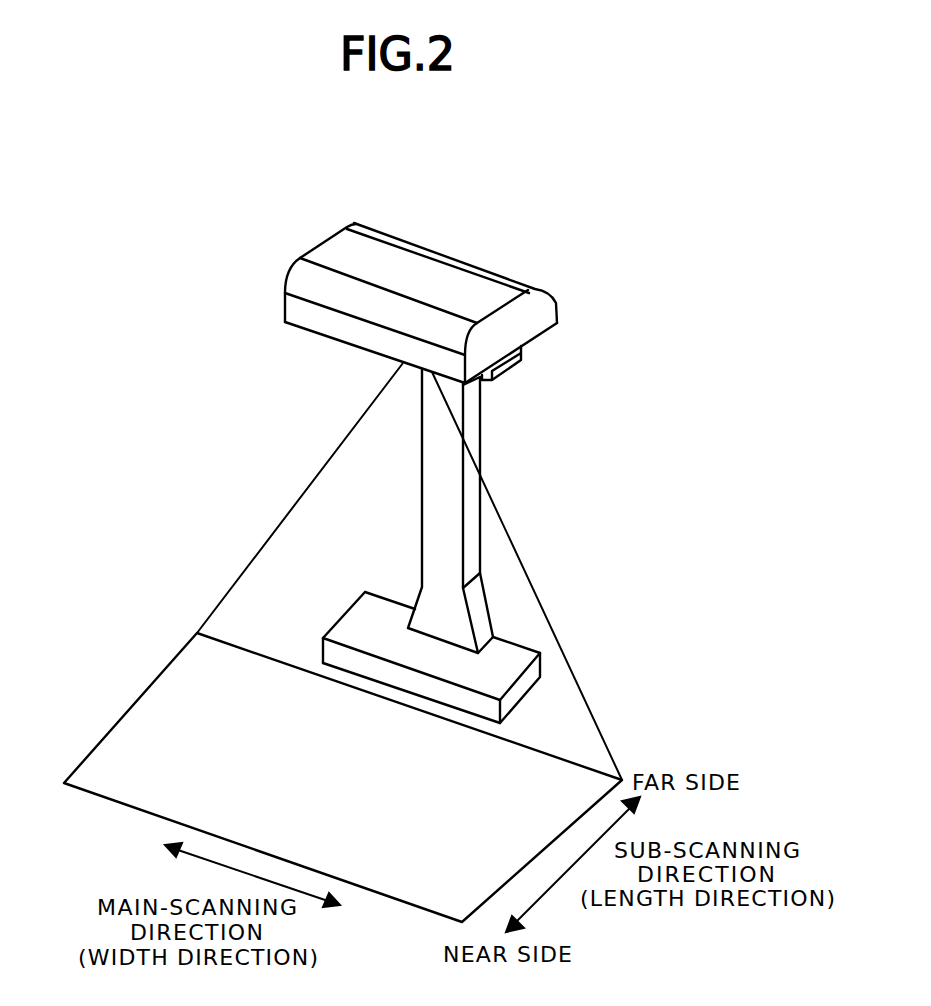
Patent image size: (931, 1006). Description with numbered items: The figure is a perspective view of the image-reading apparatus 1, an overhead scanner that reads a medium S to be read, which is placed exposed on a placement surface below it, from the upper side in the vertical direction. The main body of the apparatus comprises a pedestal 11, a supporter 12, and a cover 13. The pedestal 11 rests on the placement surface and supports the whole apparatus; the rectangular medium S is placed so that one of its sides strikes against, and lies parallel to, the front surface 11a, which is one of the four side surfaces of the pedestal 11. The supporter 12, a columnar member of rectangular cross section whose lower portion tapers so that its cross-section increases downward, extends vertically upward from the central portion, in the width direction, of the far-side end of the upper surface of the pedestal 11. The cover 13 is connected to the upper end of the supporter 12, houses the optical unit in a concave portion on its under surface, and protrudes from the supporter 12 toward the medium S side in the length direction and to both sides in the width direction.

The image-reading apparatus 1 is at (325, 200).
The cover 13 is at (484, 262).
The supporter 12 is at (481, 422).
The pedestal 11 is at (522, 642).
The front surface 11a is at (472, 695).
The medium to be read S is at (135, 709).